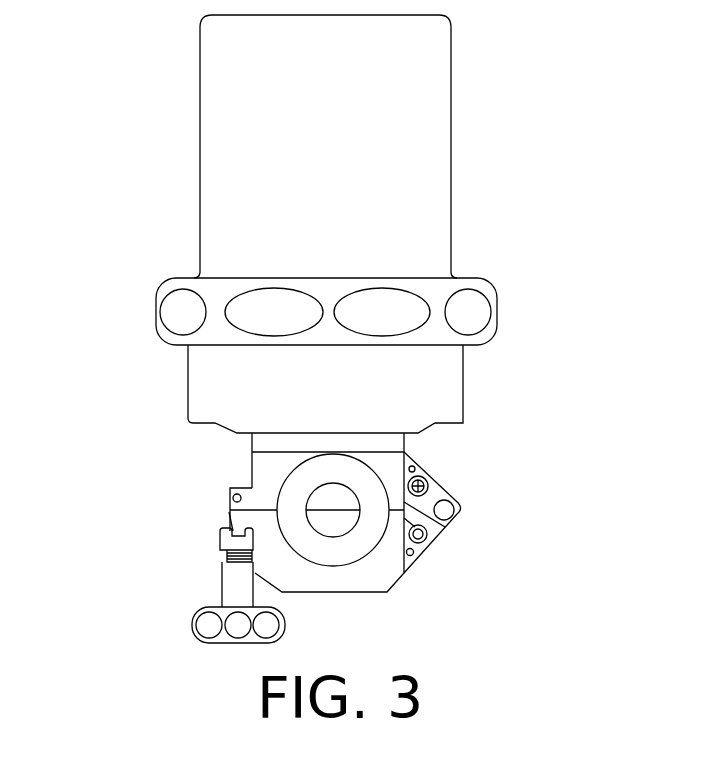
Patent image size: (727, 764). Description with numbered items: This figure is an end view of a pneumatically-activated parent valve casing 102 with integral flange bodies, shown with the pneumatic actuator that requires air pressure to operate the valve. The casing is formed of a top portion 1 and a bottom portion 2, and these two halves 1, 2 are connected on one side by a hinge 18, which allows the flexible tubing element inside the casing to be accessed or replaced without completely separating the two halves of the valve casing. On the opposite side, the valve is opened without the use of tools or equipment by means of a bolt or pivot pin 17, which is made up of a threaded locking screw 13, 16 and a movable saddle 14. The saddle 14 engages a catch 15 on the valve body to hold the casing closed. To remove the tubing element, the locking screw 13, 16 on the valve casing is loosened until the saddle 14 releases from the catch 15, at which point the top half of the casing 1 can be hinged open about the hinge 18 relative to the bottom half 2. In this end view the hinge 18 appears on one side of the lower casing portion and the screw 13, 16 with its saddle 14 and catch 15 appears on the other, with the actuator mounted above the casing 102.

The top portion of parent valve casing 1 is at (393, 463).
The bottom portion of parent valve casing 2 is at (382, 572).
The threaded locking screw 13 is at (222, 626).
The movable saddle 14 is at (228, 543).
The catch 15 is at (225, 528).
The threaded locking screw 16 is at (225, 559).
The bolt or pivot pin 17 is at (227, 493).
The hinge 18 is at (427, 537).
The parent valve casing 102 is at (450, 475).